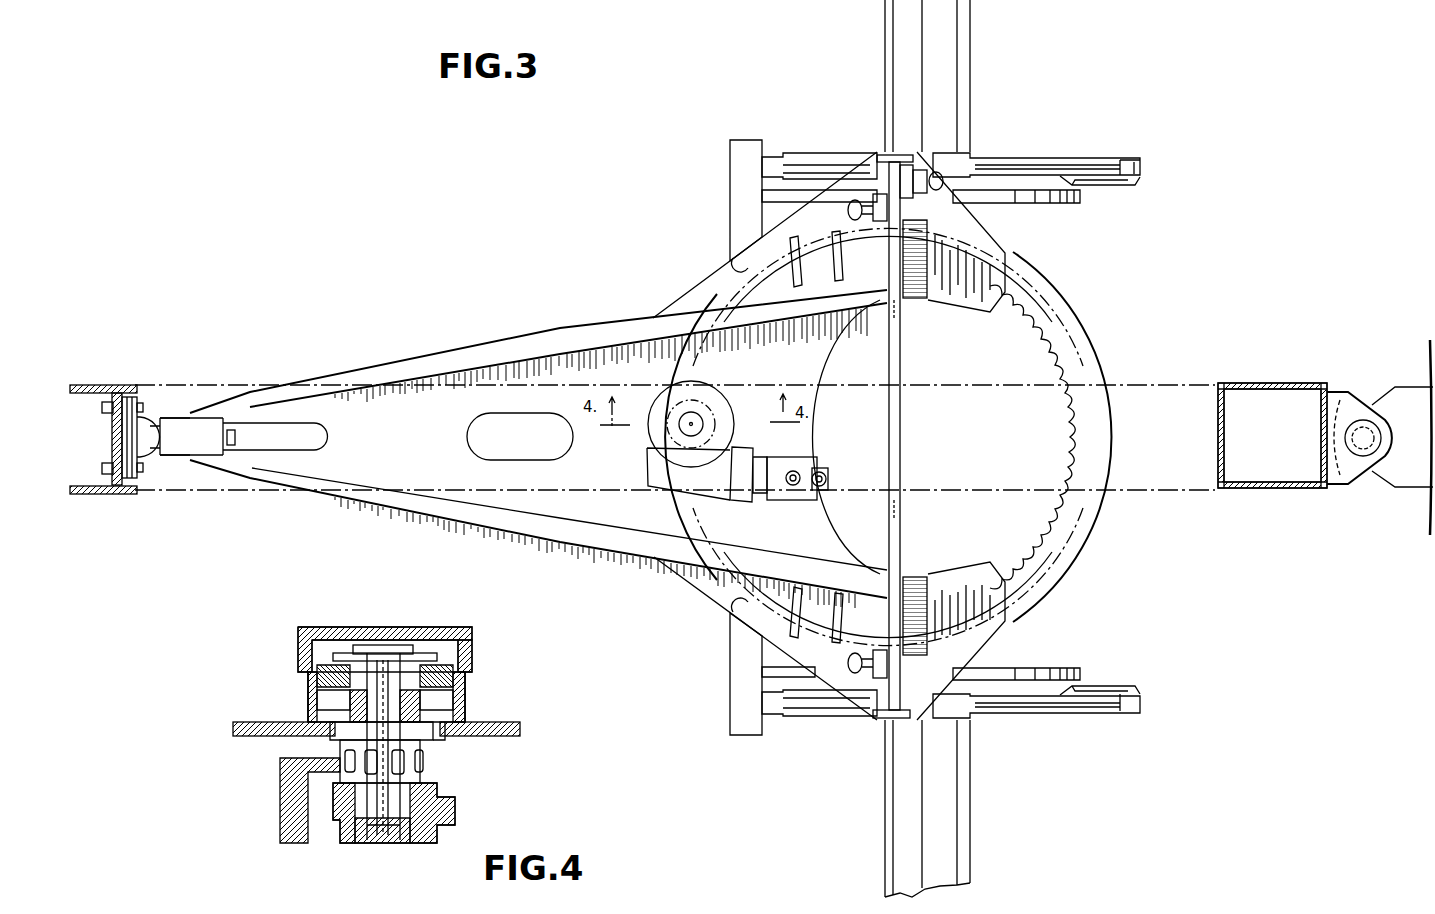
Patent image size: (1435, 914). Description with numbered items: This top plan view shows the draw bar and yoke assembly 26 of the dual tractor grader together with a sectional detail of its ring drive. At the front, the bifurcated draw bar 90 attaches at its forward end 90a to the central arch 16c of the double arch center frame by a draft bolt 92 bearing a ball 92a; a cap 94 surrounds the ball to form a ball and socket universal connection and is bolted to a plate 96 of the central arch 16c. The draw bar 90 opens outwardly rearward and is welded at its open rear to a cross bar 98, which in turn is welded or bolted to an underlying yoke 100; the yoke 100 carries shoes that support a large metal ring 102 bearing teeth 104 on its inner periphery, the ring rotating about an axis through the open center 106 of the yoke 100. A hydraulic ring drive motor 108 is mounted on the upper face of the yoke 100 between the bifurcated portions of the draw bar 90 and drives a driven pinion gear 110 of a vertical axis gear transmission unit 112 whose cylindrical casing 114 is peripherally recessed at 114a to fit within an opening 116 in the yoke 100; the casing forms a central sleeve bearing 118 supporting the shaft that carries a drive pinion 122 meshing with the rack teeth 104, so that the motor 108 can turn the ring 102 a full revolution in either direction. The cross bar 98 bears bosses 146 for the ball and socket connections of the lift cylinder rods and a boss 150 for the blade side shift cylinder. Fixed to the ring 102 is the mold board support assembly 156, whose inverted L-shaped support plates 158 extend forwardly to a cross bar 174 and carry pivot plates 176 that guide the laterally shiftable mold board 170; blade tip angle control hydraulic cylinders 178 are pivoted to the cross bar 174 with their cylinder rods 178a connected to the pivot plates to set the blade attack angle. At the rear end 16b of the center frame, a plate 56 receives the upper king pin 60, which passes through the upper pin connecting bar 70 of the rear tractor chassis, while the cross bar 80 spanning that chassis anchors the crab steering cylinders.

In FIG. 3, the rear end 16b is at (1250, 488).
In FIG. 3, the central arch 16c is at (85, 494).
In FIG. 3, the draw bar and yoke assembly 26 is at (395, 357).
In FIG. 3, the plate 56 is at (1345, 405).
In FIG. 3, the upper king pin 60 is at (1372, 440).
In FIG. 3, the upper pin connecting bar 70 is at (1398, 480).
In FIG. 3, the cross bar 80 is at (1428, 378).
In FIG. 3, the bifurcated draw bar 90 is at (497, 348).
In FIG. 3, the forward end 90a is at (185, 420).
In FIG. 3, the draft bolt 92 is at (237, 437).
In FIG. 3, the ball 92a is at (152, 420).
In FIG. 3, the cap 94 is at (128, 397).
In FIG. 3, the plate 96 is at (112, 395).
In FIG. 3, the cross bar 98 is at (897, 540).
In FIG. 3, the yoke 100 is at (990, 628).
In FIG. 4, the yoke 100 is at (510, 728).
In FIG. 4, the ring 102 is at (285, 818).
In FIG. 4, the teeth 104 is at (340, 770).
In FIG. 3, the open center 106 is at (965, 424).
In FIG. 3, the hydraulic ring drive motor 108 is at (760, 488).
In FIG. 4, the driven pinion gear 110 is at (460, 667).
In FIG. 3, the vertical axis gear transmission unit 112 is at (720, 418).
In FIG. 4, the vertical axis gear transmission unit 112 is at (486, 669).
In FIG. 4, the cylindrical casing 114 is at (466, 698).
In FIG. 4, the peripheral recess 114a is at (455, 738).
In FIG. 4, the opening 116 is at (325, 740).
In FIG. 4, the central sleeve bearing 118 is at (348, 697).
In FIG. 4, the drive pinion 122 is at (425, 765).
In FIG. 3, the boss 146 is at (846, 213).
In FIG. 3, the boss 150 is at (935, 172).
In FIG. 3, the mold board support assembly 156 is at (1021, 215).
In FIG. 3, the support plate 158 is at (1052, 205).
In FIG. 3, the mold board 170 is at (947, 92).
In FIG. 3, the cross bar 174 is at (740, 190).
In FIG. 3, the mold board pivot plate 176 is at (1040, 155).
In FIG. 3, the blade tip angle control hydraulic cylinder 178 is at (822, 155).
In FIG. 3, the cylinder rod 178a is at (1095, 160).